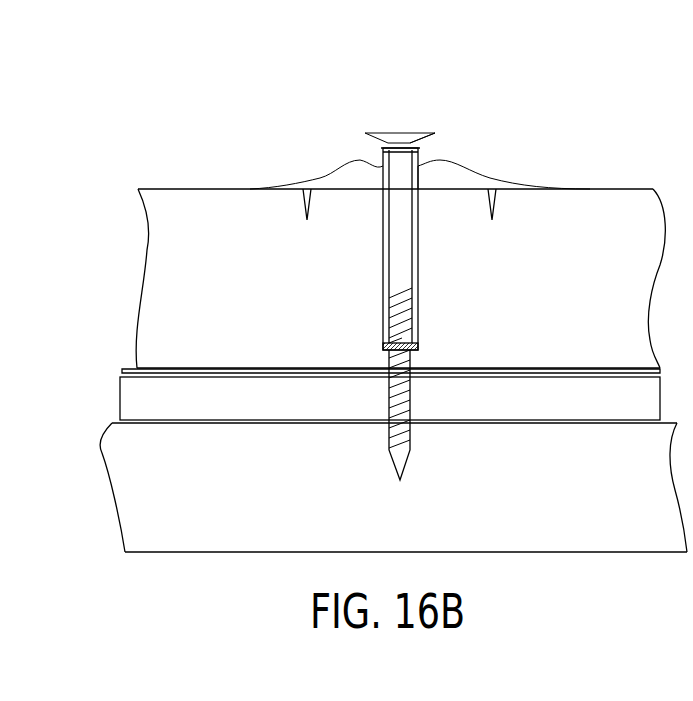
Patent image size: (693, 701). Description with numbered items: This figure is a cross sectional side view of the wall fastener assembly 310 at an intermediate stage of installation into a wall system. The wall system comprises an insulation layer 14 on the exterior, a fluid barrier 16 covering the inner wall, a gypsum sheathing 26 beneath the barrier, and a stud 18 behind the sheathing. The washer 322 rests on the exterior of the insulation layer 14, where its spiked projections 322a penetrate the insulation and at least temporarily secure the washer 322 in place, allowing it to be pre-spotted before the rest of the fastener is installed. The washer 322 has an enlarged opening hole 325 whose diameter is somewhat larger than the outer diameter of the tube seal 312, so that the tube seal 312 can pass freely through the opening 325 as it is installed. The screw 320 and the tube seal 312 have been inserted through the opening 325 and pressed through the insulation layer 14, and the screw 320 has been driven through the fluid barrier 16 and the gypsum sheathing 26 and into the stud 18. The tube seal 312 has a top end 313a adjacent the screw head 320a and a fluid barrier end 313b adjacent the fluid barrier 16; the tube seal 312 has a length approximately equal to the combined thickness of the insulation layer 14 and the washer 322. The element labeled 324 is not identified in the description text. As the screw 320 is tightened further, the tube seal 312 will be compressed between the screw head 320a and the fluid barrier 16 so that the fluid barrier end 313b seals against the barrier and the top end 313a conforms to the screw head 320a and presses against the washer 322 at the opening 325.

The wall fastener assembly 310 is at (228, 88).
The tube seal 312 is at (383, 272).
The top end 313a is at (381, 151).
The fluid barrier end 313b is at (383, 347).
The screw 320 is at (397, 440).
The screw head 320a is at (405, 132).
The washer 322 is at (290, 183).
The spiked projections 322a is at (302, 208).
The head seating surface 324 is at (443, 153).
The opening hole 325 is at (421, 193).
The insulation layer 14 is at (137, 283).
The fluid barrier 16 is at (122, 371).
The gypsum sheathing 26 is at (120, 398).
The stud 18 is at (118, 483).